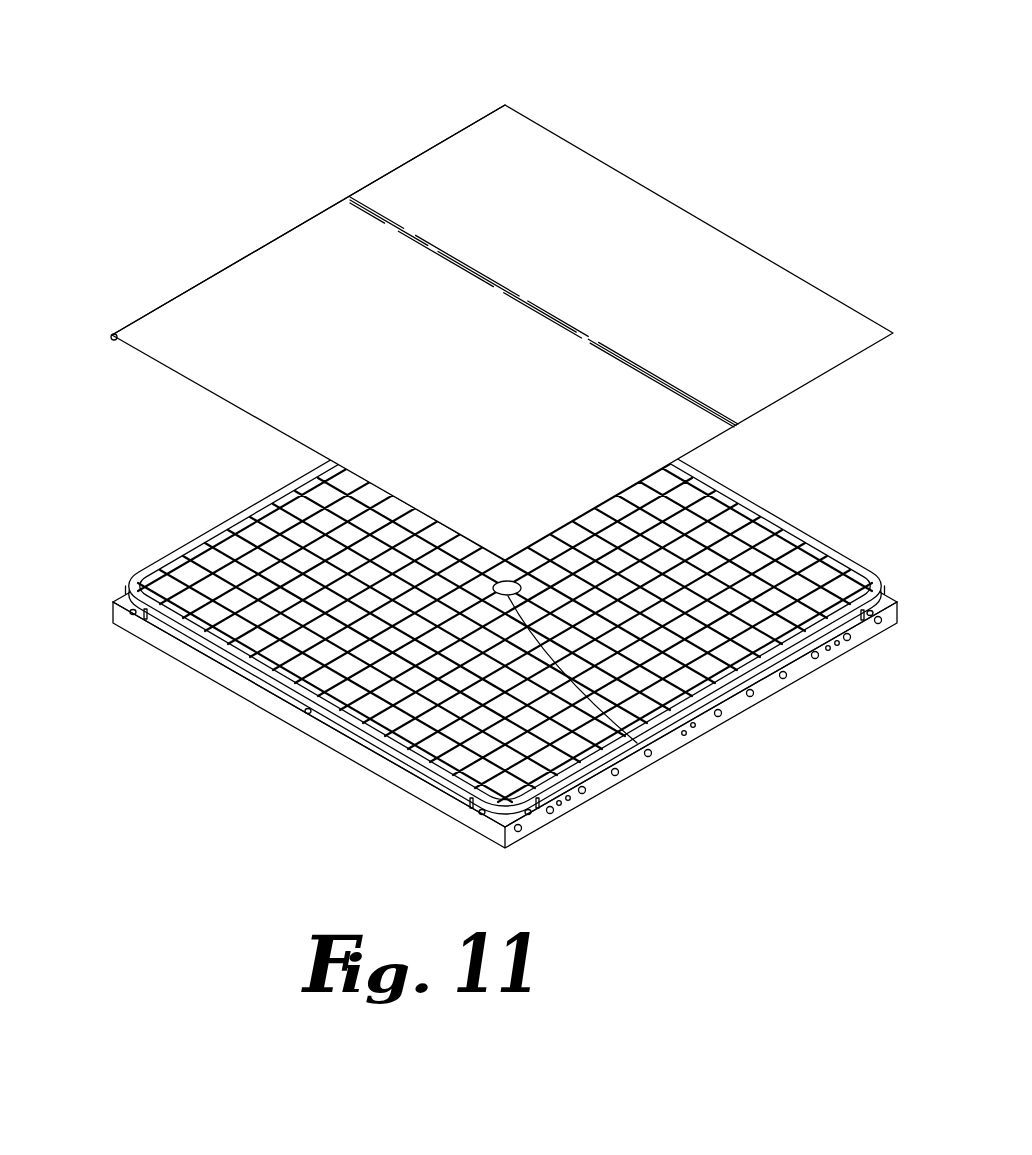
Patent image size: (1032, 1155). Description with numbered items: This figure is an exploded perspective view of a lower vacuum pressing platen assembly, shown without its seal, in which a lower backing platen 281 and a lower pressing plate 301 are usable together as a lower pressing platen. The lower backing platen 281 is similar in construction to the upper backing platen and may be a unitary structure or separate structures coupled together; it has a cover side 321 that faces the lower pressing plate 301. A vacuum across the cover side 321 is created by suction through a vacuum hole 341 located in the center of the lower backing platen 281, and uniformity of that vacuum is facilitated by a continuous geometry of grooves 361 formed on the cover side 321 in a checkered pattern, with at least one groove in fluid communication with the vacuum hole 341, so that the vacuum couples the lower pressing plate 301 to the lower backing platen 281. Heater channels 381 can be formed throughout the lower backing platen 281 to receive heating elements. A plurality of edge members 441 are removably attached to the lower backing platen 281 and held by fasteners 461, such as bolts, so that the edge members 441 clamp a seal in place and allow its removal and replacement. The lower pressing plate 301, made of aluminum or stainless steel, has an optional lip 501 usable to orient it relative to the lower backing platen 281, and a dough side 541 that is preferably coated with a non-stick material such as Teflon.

The lower backing platen 281 is at (208, 663).
The lower pressing plate 301 is at (237, 378).
The cover side 321 is at (197, 578).
The vacuum hole 341 is at (643, 740).
The grooves 361 is at (393, 737).
The heater channels 381 is at (817, 657).
The edge members 441 is at (760, 678).
The fasteners 461 is at (872, 616).
The lip 501 is at (112, 339).
The dough side 541 is at (226, 291).